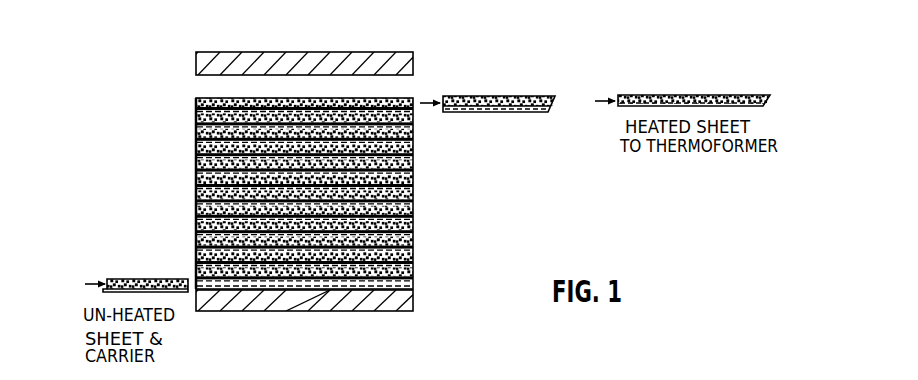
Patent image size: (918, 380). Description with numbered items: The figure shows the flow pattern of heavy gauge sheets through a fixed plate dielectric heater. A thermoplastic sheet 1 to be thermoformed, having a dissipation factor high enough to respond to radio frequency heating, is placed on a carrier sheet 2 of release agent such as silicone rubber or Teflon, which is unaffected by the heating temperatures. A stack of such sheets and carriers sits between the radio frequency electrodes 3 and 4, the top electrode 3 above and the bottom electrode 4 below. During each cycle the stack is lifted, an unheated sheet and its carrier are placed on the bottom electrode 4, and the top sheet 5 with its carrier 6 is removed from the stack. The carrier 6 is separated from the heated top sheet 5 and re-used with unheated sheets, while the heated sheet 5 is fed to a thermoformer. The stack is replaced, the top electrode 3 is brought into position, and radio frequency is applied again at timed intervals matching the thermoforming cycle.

The thermoplastic sheet 1 is at (135, 279).
The carrier sheet 2 is at (232, 294).
The radio frequency electrode 3 is at (349, 56).
The radio frequency electrode 4 is at (366, 311).
The top sheet 5 is at (412, 98).
The carrier 6 is at (200, 119).